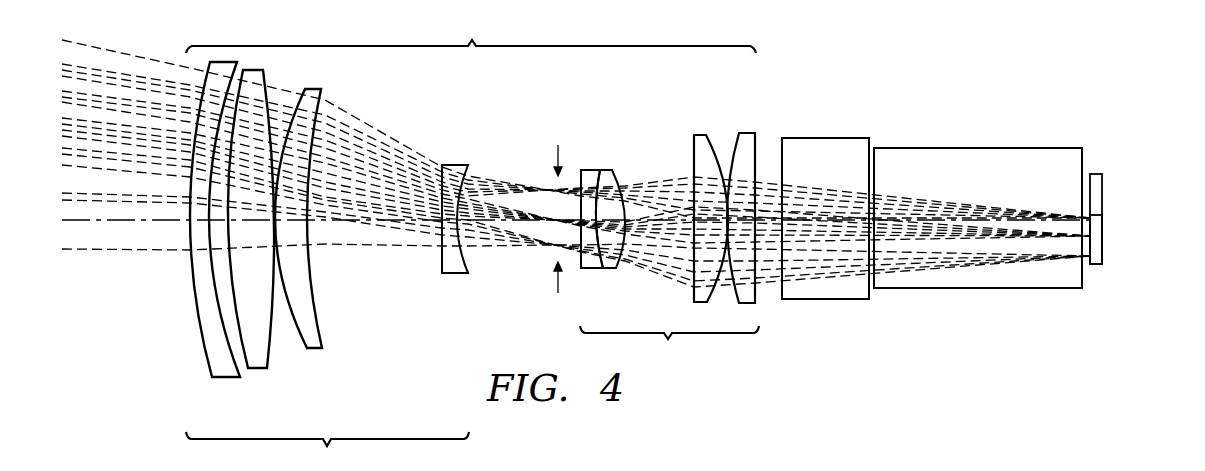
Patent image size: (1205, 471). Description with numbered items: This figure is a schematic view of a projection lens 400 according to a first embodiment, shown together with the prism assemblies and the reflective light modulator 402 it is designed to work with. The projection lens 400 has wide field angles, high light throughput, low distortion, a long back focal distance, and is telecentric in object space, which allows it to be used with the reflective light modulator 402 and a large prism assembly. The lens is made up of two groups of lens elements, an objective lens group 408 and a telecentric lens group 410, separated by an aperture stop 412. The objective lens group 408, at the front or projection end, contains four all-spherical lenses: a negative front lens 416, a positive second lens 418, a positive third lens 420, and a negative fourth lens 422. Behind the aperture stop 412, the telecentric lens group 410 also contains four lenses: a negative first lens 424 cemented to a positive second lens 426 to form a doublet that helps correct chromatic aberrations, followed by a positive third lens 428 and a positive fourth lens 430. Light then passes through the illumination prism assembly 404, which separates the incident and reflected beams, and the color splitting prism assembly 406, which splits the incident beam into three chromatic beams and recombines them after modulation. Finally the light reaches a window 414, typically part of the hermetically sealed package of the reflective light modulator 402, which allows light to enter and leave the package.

The projection lens 400 is at (471, 32).
The reflective light modulator 402 is at (1103, 200).
The illumination prism assembly 404 is at (825, 137).
The color splitting prism assembly 406 is at (978, 148).
The objective lens group 408 is at (327, 451).
The telecentric lens group 410 is at (669, 348).
The aperture stop 412 is at (559, 233).
The window 414 is at (1095, 174).
The front lens 416 is at (225, 378).
The second lens 418 is at (258, 370).
The third lens 420 is at (315, 351).
The fourth lens 422 is at (455, 275).
The first lens 424 is at (588, 168).
The second lens 426 is at (605, 270).
The third lens 428 is at (697, 133).
The fourth lens 430 is at (745, 133).